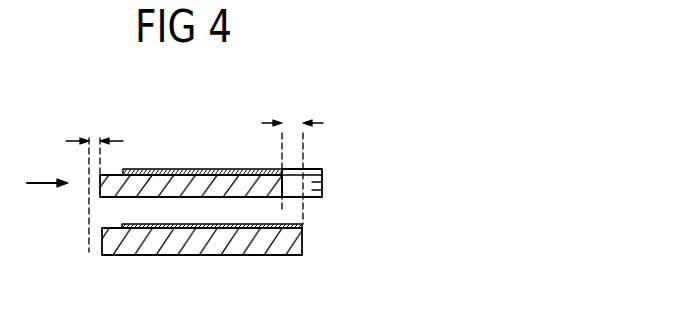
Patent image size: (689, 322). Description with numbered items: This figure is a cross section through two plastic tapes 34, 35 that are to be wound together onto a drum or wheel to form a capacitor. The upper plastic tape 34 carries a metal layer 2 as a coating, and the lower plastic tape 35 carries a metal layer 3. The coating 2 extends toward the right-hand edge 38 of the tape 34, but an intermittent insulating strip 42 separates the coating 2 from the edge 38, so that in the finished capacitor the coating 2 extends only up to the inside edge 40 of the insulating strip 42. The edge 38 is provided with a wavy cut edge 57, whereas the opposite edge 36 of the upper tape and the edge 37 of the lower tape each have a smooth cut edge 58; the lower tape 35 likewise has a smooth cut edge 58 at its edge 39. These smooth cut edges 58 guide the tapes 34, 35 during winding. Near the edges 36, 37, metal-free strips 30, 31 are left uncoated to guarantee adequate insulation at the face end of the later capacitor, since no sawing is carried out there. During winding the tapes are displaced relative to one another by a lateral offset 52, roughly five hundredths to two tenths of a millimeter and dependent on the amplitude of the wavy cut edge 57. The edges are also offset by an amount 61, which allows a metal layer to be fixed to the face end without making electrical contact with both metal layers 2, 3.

The metal layer 2 is at (195, 170).
The metal layer 3 is at (268, 223).
The metal-free strip 30 is at (103, 170).
The metal-free strip 31 is at (102, 229).
The plastic tape 34 is at (152, 184).
The plastic tape 35 is at (184, 255).
The edge 36 is at (99, 190).
The edge 37 is at (102, 241).
The right-hand edge 38 is at (312, 182).
The edge 39 is at (303, 236).
The inside edge 40 is at (265, 168).
The intermittent insulating strip 42 is at (268, 168).
The lateral offset 52 is at (289, 124).
The wavy cut edge 57 is at (312, 190).
The smooth cut edge 58 is at (97, 178).
The offset amount 61 is at (96, 140).